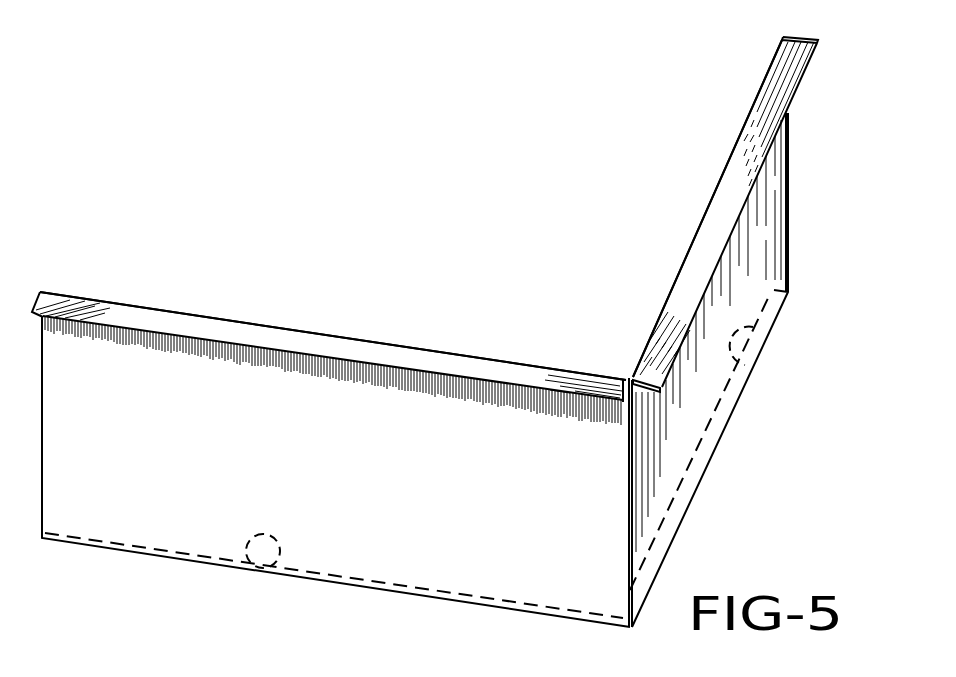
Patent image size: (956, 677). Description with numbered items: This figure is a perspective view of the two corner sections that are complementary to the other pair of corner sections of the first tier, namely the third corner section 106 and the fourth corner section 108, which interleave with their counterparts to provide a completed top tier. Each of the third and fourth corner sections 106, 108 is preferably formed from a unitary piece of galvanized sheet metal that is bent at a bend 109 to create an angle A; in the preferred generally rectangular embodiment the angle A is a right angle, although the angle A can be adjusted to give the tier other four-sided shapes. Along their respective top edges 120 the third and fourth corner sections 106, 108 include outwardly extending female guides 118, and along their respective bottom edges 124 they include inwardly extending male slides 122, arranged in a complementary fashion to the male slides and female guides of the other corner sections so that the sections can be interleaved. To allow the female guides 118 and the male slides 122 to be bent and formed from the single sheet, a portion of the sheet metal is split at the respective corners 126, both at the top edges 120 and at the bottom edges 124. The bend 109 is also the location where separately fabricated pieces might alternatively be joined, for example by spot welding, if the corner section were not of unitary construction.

The third corner section 106 is at (630, 553).
The fourth corner section 108 is at (710, 370).
The bend 109 is at (623, 480).
The female guide 118 is at (258, 348).
The top edge 120 is at (176, 312).
The male slide 122 is at (260, 536).
The bottom edge 124 is at (413, 596).
The corner 126 is at (632, 440).
The angle A is at (709, 201).